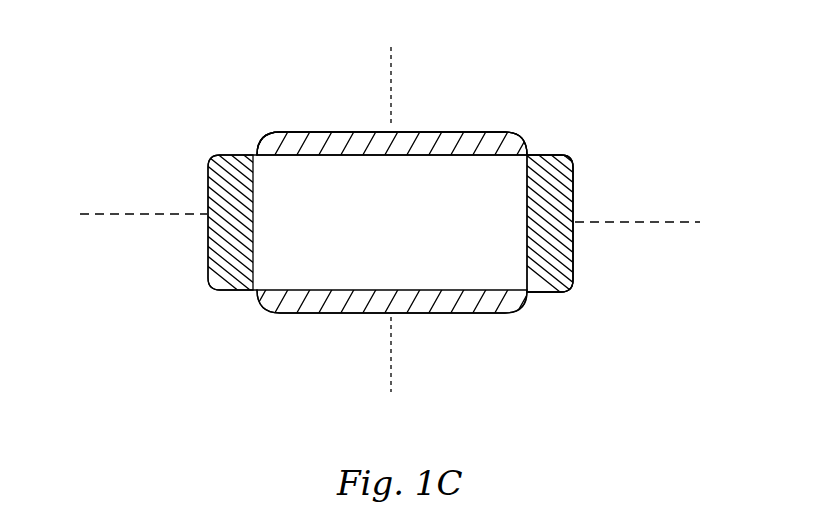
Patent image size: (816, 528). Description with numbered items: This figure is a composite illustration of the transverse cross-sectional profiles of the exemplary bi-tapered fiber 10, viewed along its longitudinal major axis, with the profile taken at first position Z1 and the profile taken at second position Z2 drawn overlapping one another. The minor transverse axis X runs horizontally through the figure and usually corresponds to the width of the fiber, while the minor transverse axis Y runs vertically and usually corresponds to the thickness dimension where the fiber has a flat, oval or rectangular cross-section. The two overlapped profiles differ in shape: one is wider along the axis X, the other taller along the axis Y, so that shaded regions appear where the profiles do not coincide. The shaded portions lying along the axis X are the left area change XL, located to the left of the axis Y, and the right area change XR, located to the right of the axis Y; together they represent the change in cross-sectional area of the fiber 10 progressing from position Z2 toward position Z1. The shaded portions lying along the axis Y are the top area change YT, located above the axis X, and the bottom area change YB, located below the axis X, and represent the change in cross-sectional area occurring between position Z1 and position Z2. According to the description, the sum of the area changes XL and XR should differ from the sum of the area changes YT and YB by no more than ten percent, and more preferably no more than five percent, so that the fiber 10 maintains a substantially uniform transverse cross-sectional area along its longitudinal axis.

The bi-tapered fiber 10 is at (437, 100).
The first position Z1 is at (573, 153).
The second position Z2 is at (497, 113).
The change in cross-sectional area Δ XL is at (213, 280).
The change in cross-sectional area Δ XR is at (567, 280).
The change in cross-sectional area Δ YT is at (300, 133).
The change in cross-sectional area Δ YB is at (292, 308).
The minor transverse axis X is at (391, 220).
The minor transverse axis Y is at (391, 218).